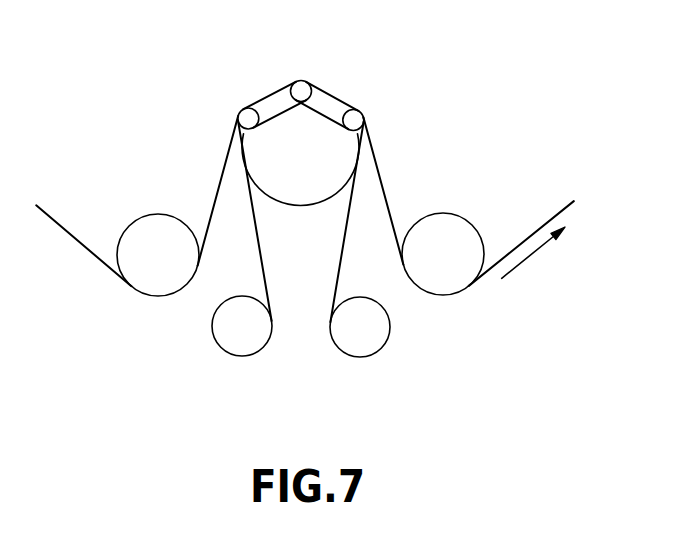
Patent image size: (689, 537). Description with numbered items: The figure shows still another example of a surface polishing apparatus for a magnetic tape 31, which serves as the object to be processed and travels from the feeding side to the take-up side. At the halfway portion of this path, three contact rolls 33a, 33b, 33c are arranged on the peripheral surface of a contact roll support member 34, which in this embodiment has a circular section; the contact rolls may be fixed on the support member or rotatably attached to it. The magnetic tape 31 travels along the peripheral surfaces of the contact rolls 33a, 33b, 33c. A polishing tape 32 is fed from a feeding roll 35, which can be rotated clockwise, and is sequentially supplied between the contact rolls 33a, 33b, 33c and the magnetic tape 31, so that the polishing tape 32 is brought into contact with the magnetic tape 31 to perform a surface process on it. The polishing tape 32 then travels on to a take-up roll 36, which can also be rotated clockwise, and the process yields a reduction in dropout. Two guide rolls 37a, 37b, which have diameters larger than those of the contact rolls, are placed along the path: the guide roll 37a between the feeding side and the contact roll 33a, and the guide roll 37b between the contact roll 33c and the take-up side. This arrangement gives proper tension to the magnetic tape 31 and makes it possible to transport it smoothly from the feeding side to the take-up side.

The magnetic tape 31 is at (531, 232).
The polishing tape 32 is at (266, 294).
The contact roll 33a is at (240, 112).
The contact roll 33b is at (298, 82).
The contact roll 33c is at (364, 121).
The contact roll support member 34 is at (275, 110).
The feeding roll 35 is at (354, 350).
The take-up roll 36 is at (236, 352).
The guide roll 37a is at (155, 292).
The guide roll 37b is at (444, 290).